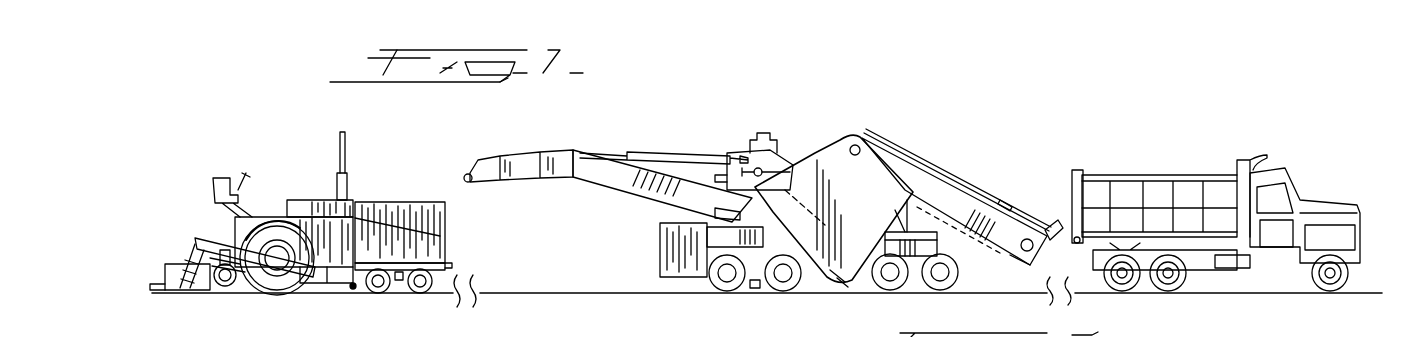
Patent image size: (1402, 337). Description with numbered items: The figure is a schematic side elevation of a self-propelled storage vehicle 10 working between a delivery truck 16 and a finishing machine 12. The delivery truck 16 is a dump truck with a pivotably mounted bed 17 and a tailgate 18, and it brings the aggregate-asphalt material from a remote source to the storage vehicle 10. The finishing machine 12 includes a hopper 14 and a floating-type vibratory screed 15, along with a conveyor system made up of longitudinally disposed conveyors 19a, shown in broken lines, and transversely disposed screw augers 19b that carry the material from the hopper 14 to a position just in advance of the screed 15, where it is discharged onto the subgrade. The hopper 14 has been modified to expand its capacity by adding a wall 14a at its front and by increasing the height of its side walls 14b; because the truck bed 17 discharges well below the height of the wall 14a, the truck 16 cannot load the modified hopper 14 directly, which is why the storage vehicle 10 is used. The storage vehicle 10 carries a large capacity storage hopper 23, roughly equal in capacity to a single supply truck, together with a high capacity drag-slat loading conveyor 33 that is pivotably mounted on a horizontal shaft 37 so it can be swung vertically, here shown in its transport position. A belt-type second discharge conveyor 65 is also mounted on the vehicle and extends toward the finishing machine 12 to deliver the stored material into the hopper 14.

The self-propelled storage vehicle 10 is at (863, 113).
The finishing machine 12 is at (372, 183).
The hopper 14 is at (398, 200).
The wall 14a is at (442, 219).
The side walls 14b is at (437, 234).
The vibratory screed 15 is at (172, 265).
The delivery truck 16 is at (1183, 143).
The bed 17 is at (1193, 240).
The tailgate 18 is at (1082, 170).
The longitudinally disposed conveyors 19a is at (350, 290).
The screw augers 19b is at (228, 288).
The storage hopper 23 is at (876, 206).
The loading conveyor 33 is at (1013, 260).
The horizontal shaft 37 is at (907, 203).
The second discharge conveyor 65 is at (605, 145).